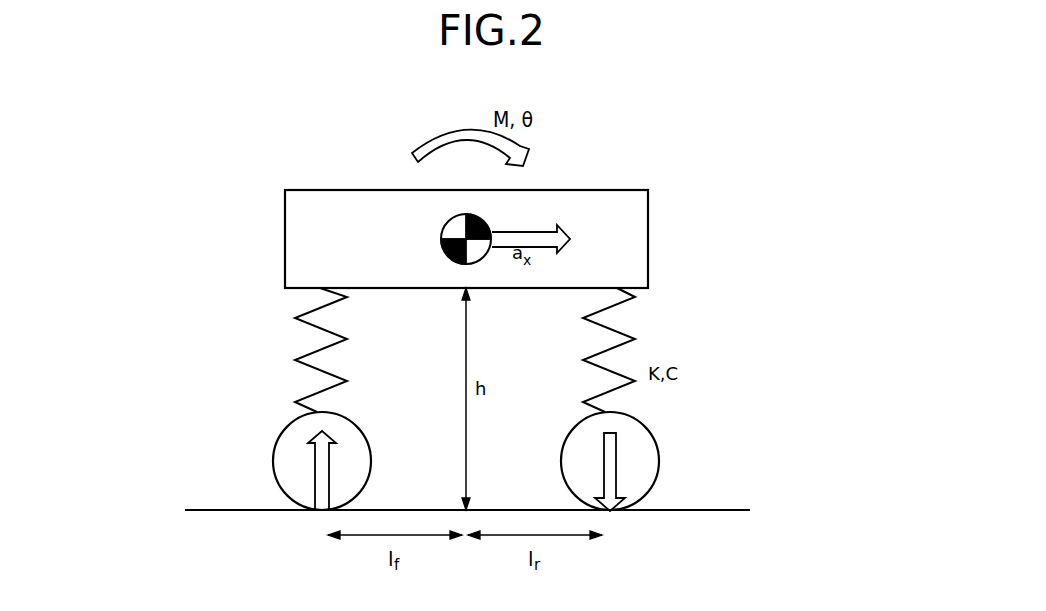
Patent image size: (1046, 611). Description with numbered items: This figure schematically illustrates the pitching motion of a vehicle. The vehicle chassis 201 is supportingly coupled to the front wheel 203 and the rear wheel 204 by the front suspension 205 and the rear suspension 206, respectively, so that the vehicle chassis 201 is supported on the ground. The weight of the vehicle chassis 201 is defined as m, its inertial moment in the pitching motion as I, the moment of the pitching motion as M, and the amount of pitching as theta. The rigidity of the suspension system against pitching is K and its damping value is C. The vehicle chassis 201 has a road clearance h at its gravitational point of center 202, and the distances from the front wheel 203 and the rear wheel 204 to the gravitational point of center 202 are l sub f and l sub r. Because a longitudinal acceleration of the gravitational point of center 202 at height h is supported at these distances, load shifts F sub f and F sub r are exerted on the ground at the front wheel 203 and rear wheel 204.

The vehicle chassis 201 is at (618, 189).
The gravitational point of center 202 is at (445, 257).
The front wheel 203 is at (272, 463).
The rear wheel 204 is at (660, 460).
The front suspension 205 is at (302, 323).
The rear suspension 206 is at (590, 322).